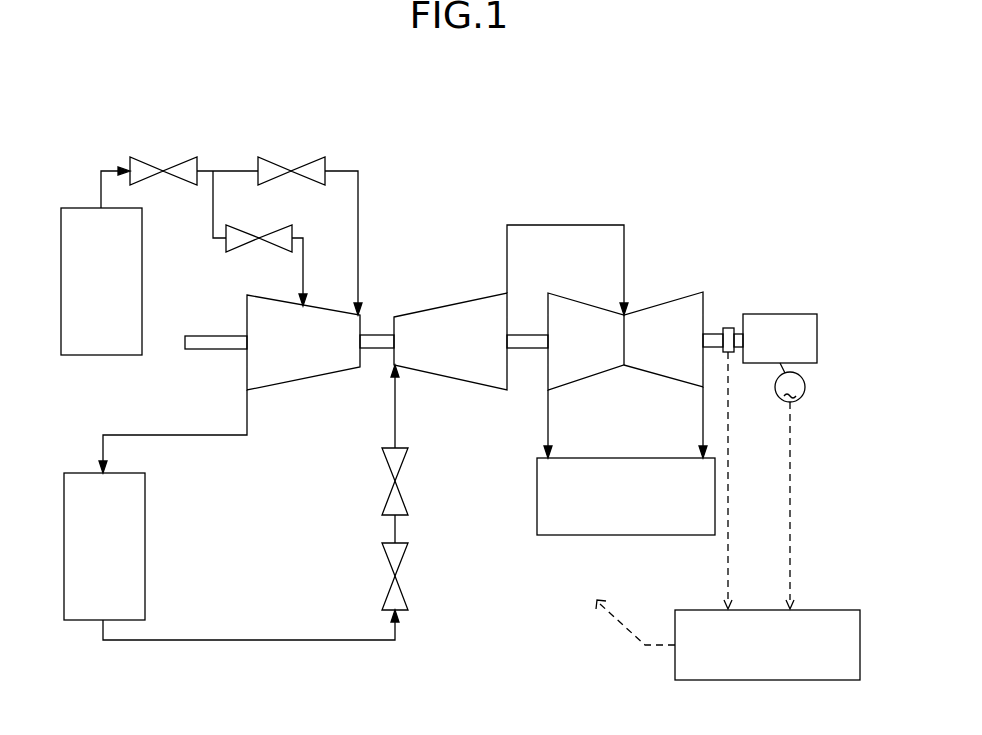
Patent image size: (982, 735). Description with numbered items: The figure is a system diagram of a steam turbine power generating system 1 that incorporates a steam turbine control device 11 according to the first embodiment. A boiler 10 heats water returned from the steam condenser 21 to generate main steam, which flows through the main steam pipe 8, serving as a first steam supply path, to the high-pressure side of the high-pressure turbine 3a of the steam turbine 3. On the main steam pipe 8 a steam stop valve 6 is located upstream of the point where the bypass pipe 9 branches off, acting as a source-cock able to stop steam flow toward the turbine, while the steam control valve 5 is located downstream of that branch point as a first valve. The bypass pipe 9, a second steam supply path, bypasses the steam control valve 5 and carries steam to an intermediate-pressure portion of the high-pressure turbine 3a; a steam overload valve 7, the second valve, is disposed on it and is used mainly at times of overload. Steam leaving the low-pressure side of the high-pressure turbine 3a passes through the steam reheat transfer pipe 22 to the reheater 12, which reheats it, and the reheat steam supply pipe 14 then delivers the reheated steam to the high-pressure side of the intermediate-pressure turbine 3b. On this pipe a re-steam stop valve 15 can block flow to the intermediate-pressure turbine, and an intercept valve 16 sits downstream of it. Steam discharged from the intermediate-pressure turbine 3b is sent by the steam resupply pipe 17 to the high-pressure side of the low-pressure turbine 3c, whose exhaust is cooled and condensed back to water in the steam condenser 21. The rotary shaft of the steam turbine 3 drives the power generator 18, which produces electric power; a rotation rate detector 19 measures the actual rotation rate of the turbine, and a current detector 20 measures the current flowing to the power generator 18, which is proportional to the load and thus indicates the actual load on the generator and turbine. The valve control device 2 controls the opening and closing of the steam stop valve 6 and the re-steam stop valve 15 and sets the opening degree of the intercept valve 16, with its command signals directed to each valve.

The steam turbine power generating system 1 is at (490, 122).
The valve control device 2 is at (698, 601).
The steam turbine 3 is at (402, 268).
The high-pressure turbine 3a is at (303, 381).
The intermediate-pressure turbine 3b is at (450, 303).
The low-pressure turbine 3c is at (667, 301).
The steam control valve 5 is at (280, 161).
The steam stop valve 6 is at (148, 161).
The steam overload valve 7 is at (232, 253).
The main steam pipe 8 is at (233, 168).
The bypass pipe 9 is at (213, 212).
The boiler 10 is at (142, 293).
The steam turbine control device 11 is at (220, 137).
The reheater 12 is at (145, 550).
The reheat steam supply pipe 14 is at (280, 639).
The re-steam stop valve 15 is at (402, 592).
The intercept valve 16 is at (402, 497).
The steam resupply pipe 17 is at (560, 225).
The power generator 18 is at (780, 313).
The rotation rate detector 19 is at (727, 327).
The current detector 20 is at (805, 386).
The steam condenser 21 is at (620, 457).
The steam reheat transfer pipe 22 is at (178, 434).